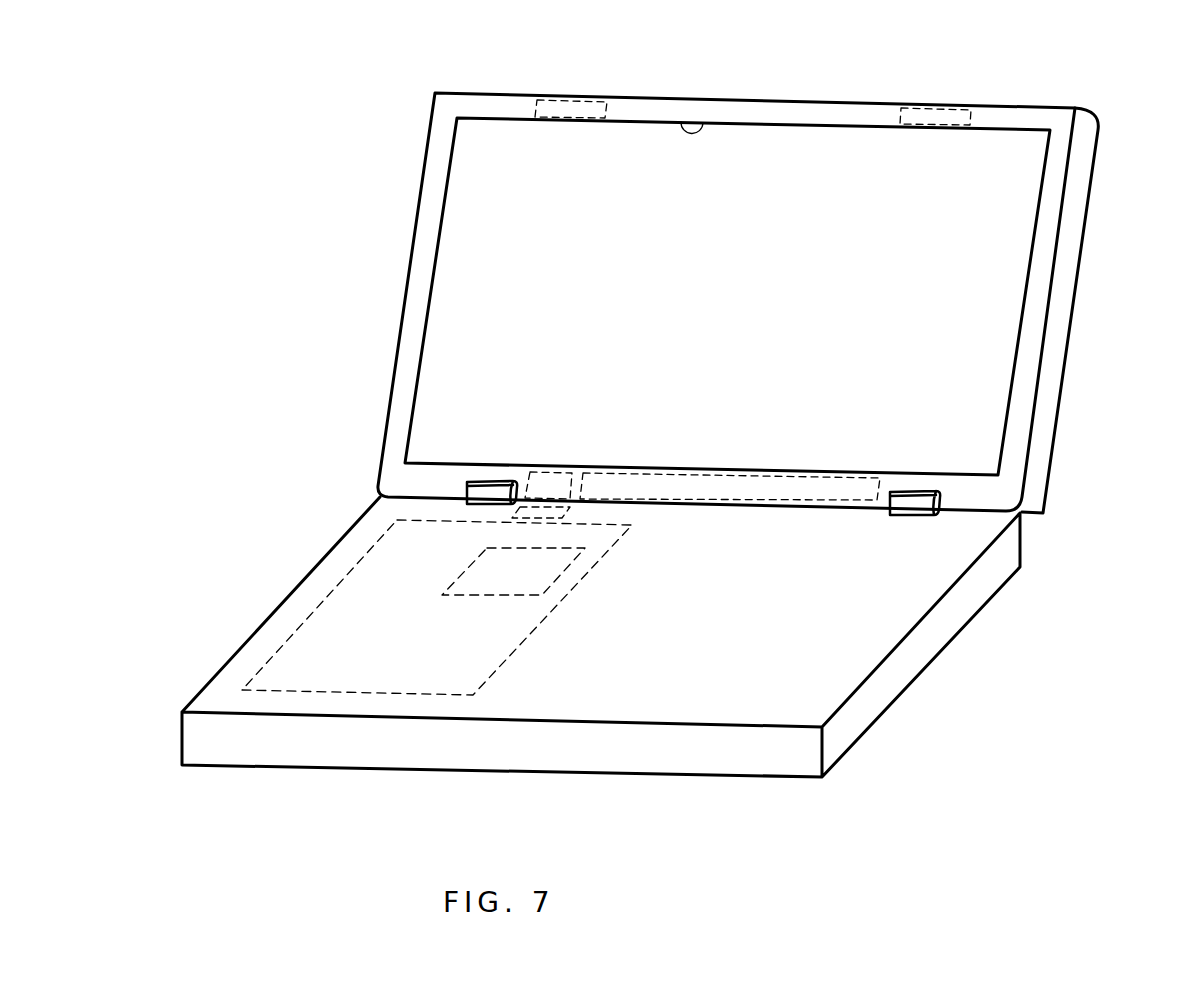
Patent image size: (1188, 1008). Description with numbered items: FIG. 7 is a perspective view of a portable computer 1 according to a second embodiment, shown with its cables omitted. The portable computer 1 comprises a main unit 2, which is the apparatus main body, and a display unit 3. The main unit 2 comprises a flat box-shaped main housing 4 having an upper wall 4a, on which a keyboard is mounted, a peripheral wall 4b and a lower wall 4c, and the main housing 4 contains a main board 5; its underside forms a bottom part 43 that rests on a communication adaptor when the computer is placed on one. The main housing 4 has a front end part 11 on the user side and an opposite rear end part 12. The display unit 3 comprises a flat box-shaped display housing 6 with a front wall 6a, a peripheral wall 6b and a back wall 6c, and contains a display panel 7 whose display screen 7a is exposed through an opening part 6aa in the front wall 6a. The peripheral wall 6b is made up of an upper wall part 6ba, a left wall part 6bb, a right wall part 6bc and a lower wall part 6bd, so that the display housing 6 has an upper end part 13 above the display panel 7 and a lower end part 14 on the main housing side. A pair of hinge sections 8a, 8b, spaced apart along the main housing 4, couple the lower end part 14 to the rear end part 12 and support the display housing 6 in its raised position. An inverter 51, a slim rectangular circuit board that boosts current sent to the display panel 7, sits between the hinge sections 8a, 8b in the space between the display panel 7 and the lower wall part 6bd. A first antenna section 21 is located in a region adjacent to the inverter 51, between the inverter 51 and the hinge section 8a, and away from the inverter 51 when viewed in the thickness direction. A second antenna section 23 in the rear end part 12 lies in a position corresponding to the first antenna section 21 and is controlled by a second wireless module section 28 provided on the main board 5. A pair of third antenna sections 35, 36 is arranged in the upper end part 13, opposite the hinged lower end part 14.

The portable computer 1 is at (268, 198).
The main unit 2 is at (312, 550).
The display unit 3 is at (405, 219).
The main housing 4 is at (948, 639).
The upper wall 4a is at (636, 705).
The peripheral wall 4b is at (735, 765).
The lower wall 4c is at (864, 738).
The main board 5 is at (367, 692).
The display housing 6 is at (1078, 303).
The front wall 6a is at (770, 108).
The opening part 6aa is at (700, 122).
The peripheral wall 6b is at (1080, 212).
The upper wall part 6ba is at (646, 100).
The left wall part 6bb is at (407, 287).
The right wall part 6bc is at (1058, 355).
The lower wall part 6bd is at (884, 505).
The back wall 6c is at (1058, 416).
The display panel 7 is at (868, 145).
The display screen 7a is at (729, 290).
The hinge section 8a is at (492, 482).
The hinge section 8b is at (910, 497).
The front end part 11 is at (550, 705).
The rear end part 12 is at (985, 532).
The upper end part 13 is at (822, 110).
The lower end part 14 is at (888, 485).
The first antenna section 21 is at (546, 472).
The second antenna section 23 is at (560, 508).
The second wireless module section 28 is at (563, 573).
The third antenna section 35 is at (577, 100).
The third antenna section 36 is at (938, 108).
The bottom part 43 is at (913, 683).
The inverter 51 is at (718, 473).